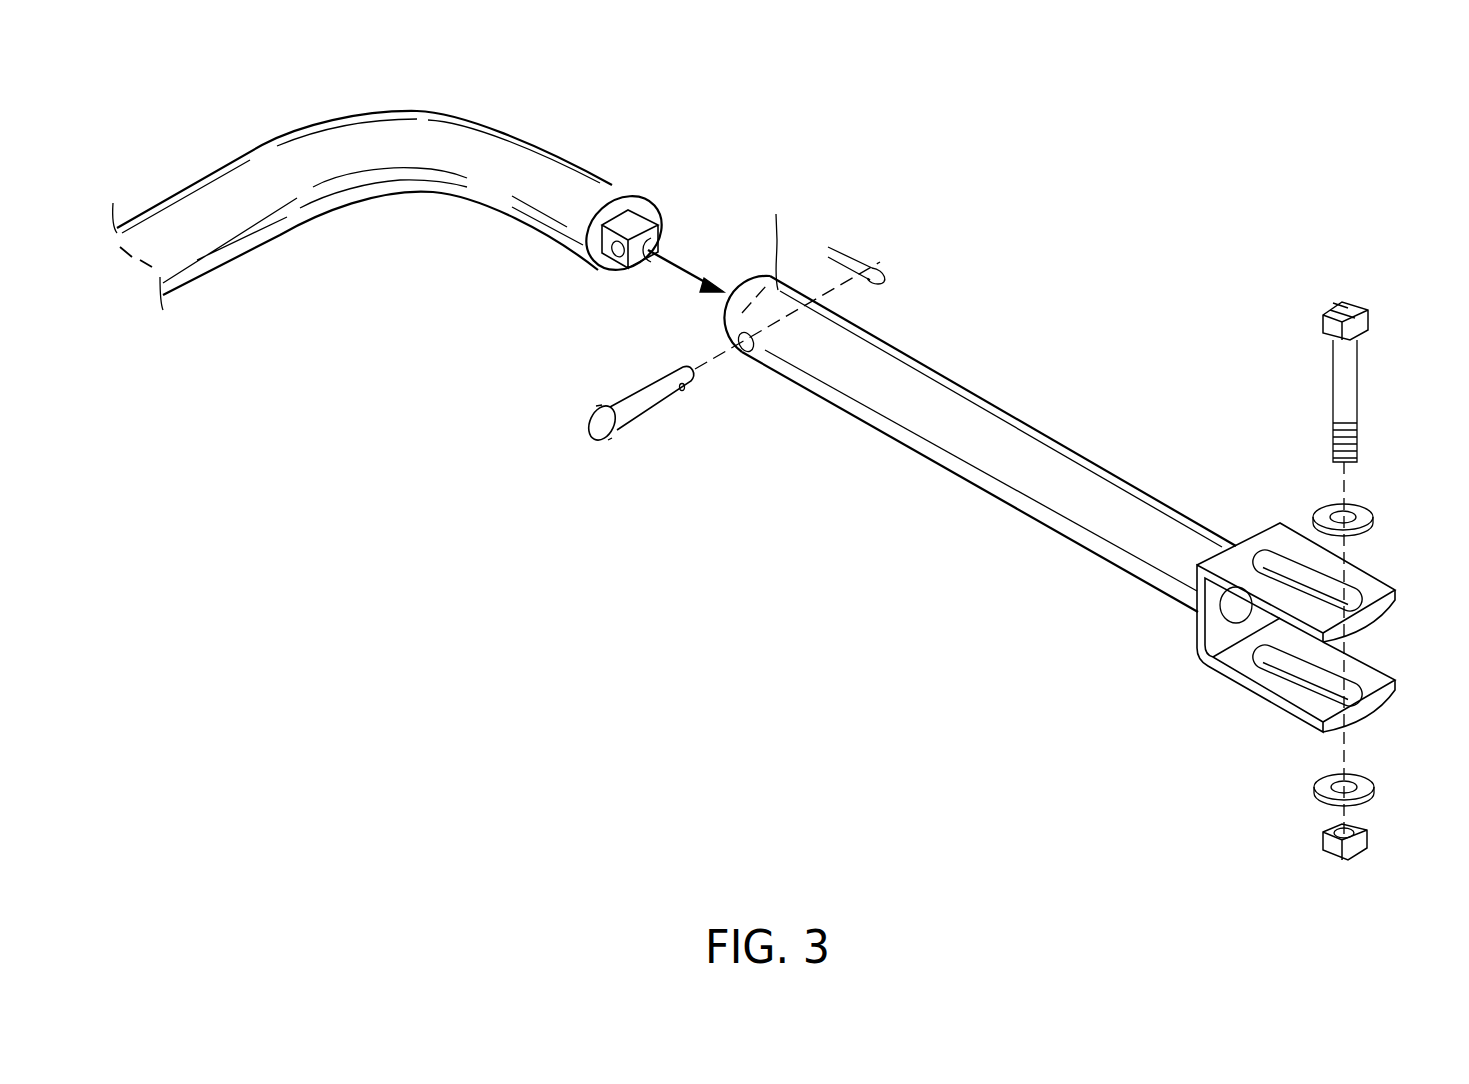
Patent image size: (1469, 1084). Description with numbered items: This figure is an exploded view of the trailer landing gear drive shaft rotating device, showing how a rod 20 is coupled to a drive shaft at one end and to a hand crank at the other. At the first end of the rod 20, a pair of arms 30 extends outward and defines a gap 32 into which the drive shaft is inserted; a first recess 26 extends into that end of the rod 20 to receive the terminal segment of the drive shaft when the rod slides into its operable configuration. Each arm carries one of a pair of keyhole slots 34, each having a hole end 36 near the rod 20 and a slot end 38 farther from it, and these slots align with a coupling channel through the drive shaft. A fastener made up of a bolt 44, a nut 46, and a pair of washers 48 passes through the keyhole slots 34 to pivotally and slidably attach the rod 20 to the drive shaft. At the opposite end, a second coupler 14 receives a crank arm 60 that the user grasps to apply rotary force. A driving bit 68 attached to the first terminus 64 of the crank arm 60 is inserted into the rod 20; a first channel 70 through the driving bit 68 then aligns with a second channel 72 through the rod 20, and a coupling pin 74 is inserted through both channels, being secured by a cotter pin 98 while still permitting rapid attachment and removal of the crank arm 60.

The second coupler 14 is at (778, 231).
The rod 20 is at (950, 478).
The first recess 26 is at (1240, 612).
The pair of arms 30 is at (1257, 598).
The gap 32 is at (1378, 653).
The keyhole slots 34 is at (1317, 592).
The hole end 36 is at (1266, 555).
The slot end 38 is at (1355, 703).
The bolt 44 is at (1350, 374).
The nut 46 is at (1368, 838).
The washers 48 is at (1366, 790).
The crank arm 60 is at (395, 128).
The first terminus 64 is at (593, 212).
The driving bit 68 is at (637, 228).
The first channel 70 is at (616, 256).
The second channel 72 is at (745, 355).
The coupling pin 74 is at (648, 398).
The cotter pin 98 is at (880, 270).